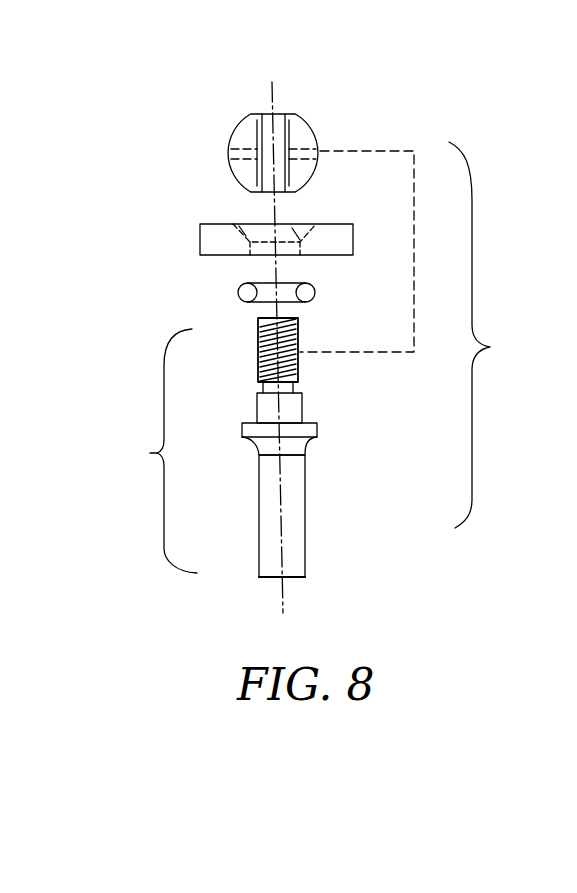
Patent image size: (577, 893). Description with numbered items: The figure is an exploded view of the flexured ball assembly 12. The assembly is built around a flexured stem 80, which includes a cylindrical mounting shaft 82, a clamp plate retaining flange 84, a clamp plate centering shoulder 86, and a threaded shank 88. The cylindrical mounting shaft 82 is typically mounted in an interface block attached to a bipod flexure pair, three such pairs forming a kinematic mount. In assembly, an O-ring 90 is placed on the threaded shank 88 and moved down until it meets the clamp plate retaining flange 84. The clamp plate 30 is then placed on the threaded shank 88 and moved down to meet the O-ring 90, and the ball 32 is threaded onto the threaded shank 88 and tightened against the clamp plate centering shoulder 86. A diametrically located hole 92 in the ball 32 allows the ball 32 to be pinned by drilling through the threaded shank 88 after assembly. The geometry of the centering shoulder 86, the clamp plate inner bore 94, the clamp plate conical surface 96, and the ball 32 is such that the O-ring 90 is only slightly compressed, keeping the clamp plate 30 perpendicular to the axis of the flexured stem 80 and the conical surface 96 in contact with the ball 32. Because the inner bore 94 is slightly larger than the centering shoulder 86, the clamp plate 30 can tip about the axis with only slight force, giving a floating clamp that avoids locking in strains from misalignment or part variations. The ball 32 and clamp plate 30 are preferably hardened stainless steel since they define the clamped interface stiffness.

The flexured ball assembly 12 is at (416, 335).
The clamp plate 30 is at (200, 242).
The ball 32 is at (238, 131).
The flexured stem 80 is at (152, 451).
The cylindrical mounting shaft 82 is at (292, 502).
The clamp plate retaining flange 84 is at (252, 430).
The clamp plate centering shoulder 86 is at (295, 408).
The threaded shank 88 is at (262, 378).
The O-ring 90 is at (238, 296).
The diametrically located hole 92 is at (312, 150).
The clamp plate inner bore 94 is at (287, 255).
The clamp plate conical surface 96 is at (298, 226).